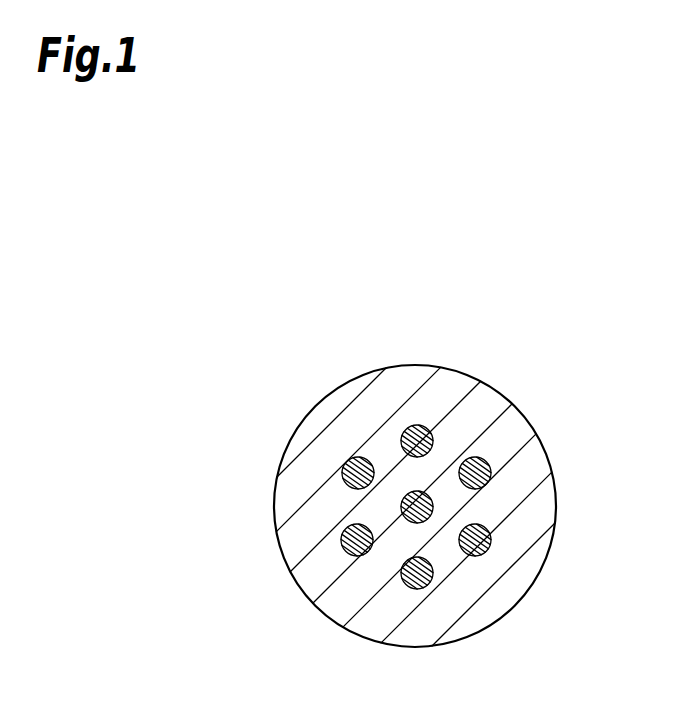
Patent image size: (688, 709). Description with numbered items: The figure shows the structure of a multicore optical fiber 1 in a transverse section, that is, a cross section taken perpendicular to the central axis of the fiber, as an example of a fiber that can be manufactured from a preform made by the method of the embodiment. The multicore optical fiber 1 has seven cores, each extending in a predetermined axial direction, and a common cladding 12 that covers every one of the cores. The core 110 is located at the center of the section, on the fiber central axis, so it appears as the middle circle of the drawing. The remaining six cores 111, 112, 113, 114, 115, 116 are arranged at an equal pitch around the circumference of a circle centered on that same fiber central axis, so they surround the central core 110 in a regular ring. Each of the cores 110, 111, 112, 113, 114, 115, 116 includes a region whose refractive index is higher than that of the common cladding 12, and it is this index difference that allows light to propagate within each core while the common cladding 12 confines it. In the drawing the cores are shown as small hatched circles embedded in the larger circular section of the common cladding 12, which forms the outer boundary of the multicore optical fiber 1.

The multicore optical fiber 1 is at (447, 342).
The common cladding 12 is at (465, 385).
The core 110 is at (412, 500).
The core 111 is at (483, 467).
The core 112 is at (483, 542).
The core 113 is at (420, 572).
The core 114 is at (345, 535).
The core 115 is at (344, 477).
The core 116 is at (403, 440).